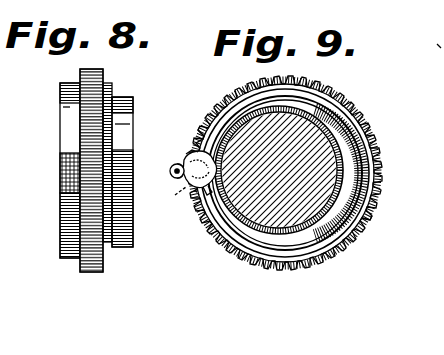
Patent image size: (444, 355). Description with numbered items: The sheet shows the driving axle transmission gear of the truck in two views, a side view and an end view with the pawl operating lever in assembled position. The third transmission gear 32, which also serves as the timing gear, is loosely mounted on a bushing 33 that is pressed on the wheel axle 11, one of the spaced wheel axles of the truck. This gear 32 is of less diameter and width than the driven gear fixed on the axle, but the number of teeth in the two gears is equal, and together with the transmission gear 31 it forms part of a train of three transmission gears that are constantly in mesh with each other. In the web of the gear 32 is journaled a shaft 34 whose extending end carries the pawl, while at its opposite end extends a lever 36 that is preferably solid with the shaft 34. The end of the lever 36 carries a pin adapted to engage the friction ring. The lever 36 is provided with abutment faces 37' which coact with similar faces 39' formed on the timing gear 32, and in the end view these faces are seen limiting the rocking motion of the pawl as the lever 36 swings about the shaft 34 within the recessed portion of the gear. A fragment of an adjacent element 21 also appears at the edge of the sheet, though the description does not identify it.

In FIG. 9, the wheel axle 11 is at (262, 231).
In FIG. 9, the housing part 21 is at (437, 51).
In FIG. 9, the transmission gear 31 is at (173, 165).
In FIG. 8, the third transmission gear 32 is at (82, 80).
In FIG. 9, the third transmission gear 32 is at (378, 168).
In FIG. 9, the bushing 33 is at (371, 219).
In FIG. 9, the shaft 34 is at (189, 183).
In FIG. 9, the lever 36 is at (188, 152).
In FIG. 9, the abutment faces 37' is at (179, 159).
In FIG. 9, the abutment faces 39' is at (209, 110).